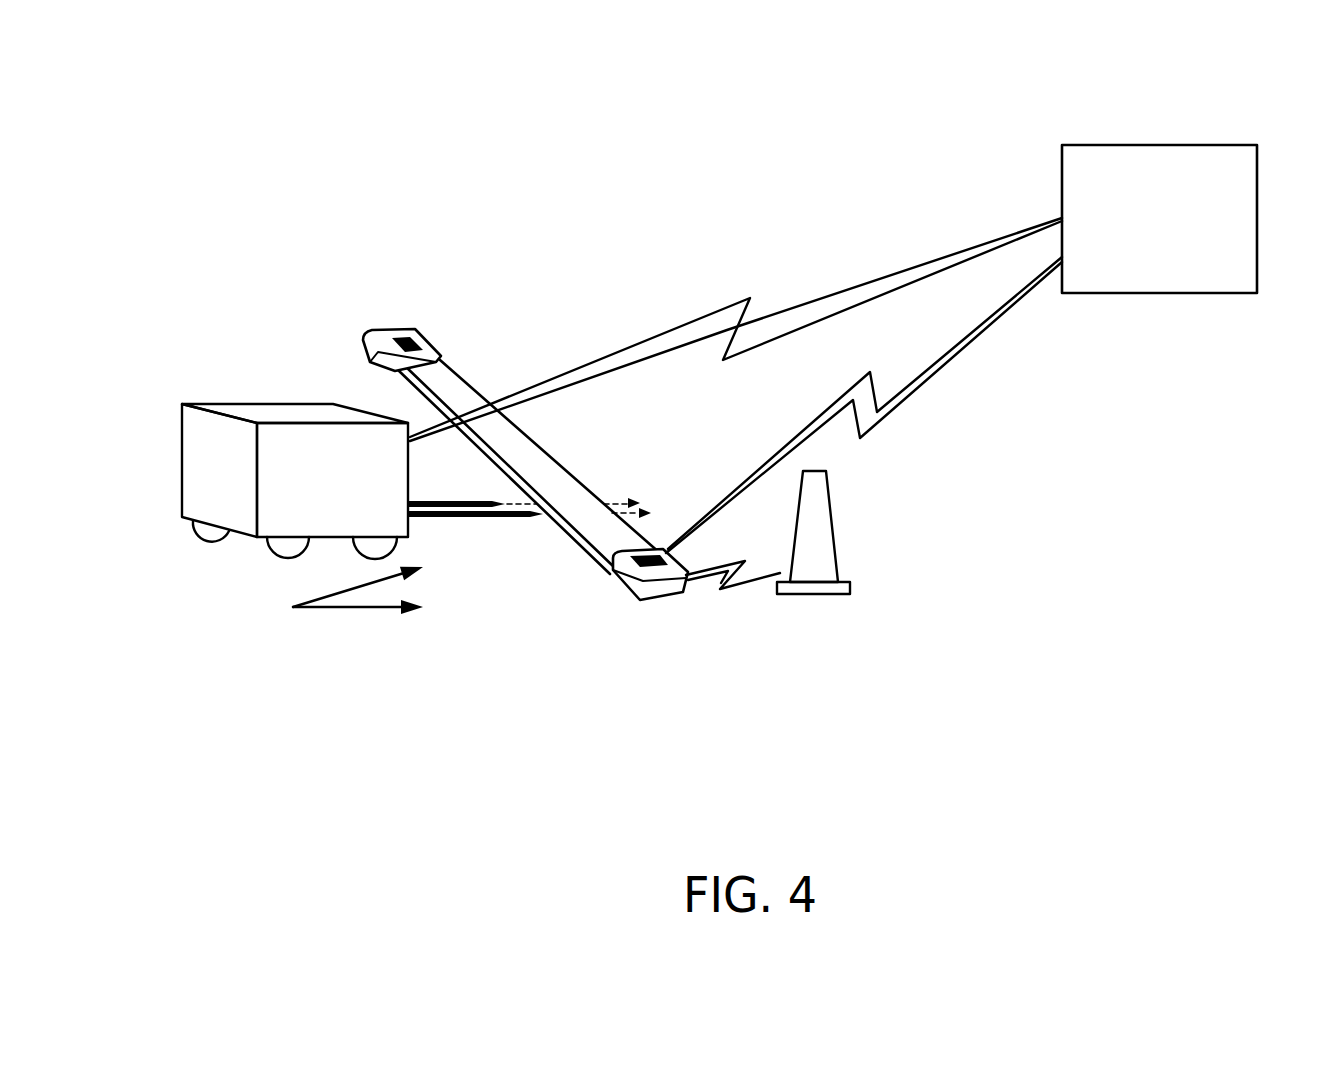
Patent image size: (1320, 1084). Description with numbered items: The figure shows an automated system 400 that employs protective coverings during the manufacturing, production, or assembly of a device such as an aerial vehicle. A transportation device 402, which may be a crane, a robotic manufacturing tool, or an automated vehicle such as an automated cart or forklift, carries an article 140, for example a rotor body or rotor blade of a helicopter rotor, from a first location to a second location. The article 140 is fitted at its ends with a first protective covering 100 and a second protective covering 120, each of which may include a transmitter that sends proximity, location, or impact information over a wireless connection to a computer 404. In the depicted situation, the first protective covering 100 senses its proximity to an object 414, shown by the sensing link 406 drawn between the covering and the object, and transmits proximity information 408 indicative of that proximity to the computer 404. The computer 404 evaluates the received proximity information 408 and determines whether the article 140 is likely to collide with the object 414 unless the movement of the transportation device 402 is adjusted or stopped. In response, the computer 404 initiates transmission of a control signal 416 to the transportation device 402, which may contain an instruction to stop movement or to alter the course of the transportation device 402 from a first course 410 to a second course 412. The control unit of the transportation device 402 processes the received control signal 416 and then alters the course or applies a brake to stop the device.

The automated system 400 is at (326, 116).
The transportation device 402 is at (286, 399).
The computer 404 is at (1139, 250).
The wireless signal to object 406 is at (730, 609).
The proximity information 408 is at (964, 361).
The first course 410 is at (338, 608).
The second course 412 is at (322, 598).
The object 414 is at (848, 514).
The control signal 416 is at (840, 283).
The protective covering 120 is at (419, 313).
The first protective covering 100 is at (656, 609).
The article 140 is at (541, 428).